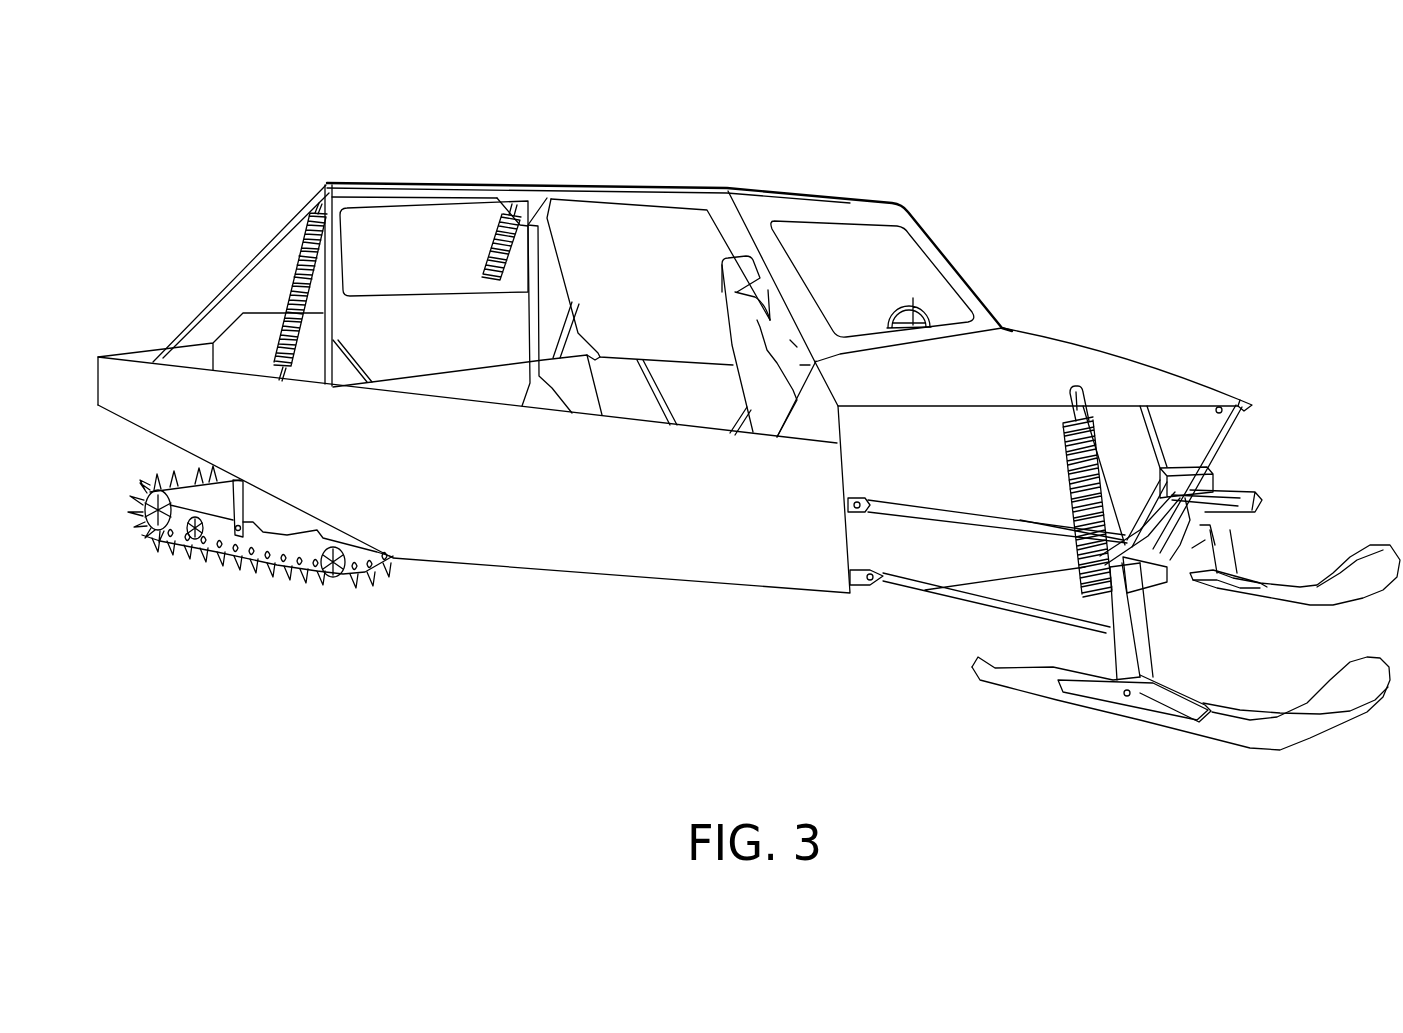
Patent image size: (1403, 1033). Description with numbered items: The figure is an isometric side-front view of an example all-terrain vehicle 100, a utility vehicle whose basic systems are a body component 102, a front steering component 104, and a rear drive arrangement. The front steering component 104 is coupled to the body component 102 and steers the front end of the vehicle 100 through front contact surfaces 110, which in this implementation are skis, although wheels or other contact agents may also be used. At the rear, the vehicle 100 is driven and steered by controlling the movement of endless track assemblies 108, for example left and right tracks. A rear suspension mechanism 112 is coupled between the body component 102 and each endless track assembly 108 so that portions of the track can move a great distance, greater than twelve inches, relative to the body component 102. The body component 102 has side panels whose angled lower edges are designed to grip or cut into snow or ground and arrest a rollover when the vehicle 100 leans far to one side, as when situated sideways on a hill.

The all-terrain vehicle 100 is at (343, 69).
The body component 102 is at (627, 577).
The front steering component 104 is at (1233, 492).
The endless track assembly 108 is at (220, 560).
The front contact surfaces 110 is at (1016, 693).
The rear suspension mechanism 112 is at (307, 258).